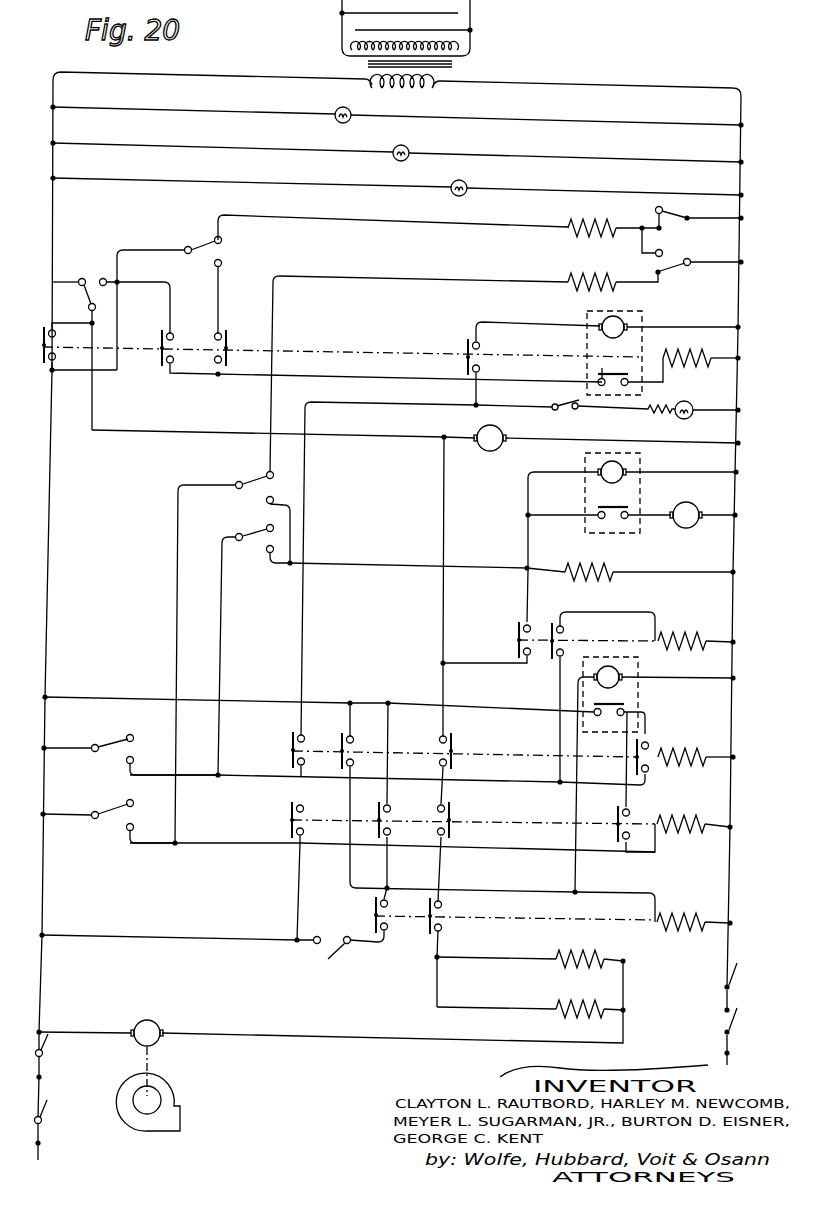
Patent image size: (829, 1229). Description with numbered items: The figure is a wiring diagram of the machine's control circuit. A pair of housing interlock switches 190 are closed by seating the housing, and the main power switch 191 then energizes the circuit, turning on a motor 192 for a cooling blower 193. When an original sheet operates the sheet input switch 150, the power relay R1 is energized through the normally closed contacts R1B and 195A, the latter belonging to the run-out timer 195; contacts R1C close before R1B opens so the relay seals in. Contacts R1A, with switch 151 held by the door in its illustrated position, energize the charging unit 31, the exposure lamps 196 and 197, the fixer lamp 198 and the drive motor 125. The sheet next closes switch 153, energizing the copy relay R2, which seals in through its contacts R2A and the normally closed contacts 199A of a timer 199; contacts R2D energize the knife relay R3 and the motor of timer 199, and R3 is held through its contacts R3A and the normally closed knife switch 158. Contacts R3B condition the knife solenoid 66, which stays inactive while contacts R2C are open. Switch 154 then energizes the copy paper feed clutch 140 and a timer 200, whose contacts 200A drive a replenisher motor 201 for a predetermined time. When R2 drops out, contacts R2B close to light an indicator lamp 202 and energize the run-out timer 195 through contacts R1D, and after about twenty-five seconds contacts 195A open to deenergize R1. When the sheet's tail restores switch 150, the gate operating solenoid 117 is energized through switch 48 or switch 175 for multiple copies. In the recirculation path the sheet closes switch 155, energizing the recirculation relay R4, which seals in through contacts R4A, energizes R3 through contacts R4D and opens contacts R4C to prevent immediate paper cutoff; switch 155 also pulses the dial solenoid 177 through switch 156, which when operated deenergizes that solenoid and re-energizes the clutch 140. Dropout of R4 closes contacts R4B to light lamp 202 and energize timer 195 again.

The charging unit 31 is at (486, 31).
The exposure lamp 196 is at (335, 121).
The exposure lamp 197 is at (393, 159).
The fixer lamp 198 is at (451, 194).
The switch 175 is at (665, 200).
The gate operating solenoid 117 is at (566, 232).
The switch 48 is at (645, 272).
The dial solenoid 177 is at (567, 289).
The sheet input switch 150 is at (226, 248).
The switch 151 is at (88, 272).
The relay contacts R1A is at (42, 321).
The normally closed contacts R1B is at (232, 342).
The relay contacts R1C is at (169, 374).
The relay contacts R1D is at (459, 354).
The run-out timer 195 is at (640, 312).
The normally closed contacts 195A is at (598, 378).
The power relay R1 is at (704, 356).
The indicator lamp 202 is at (680, 419).
The drive motor 125 is at (490, 452).
The timer 200 is at (643, 469).
The timer contacts 200A is at (591, 509).
The replenisher motor 201 is at (690, 529).
The copy paper feed clutch 140 is at (600, 582).
The switch 156 is at (258, 476).
The switch 154 is at (256, 555).
The timer 199 is at (638, 672).
The normally closed contacts 199A is at (633, 709).
The relay contacts R2A is at (630, 767).
The copy relay R2 is at (695, 747).
The relay contacts R2B is at (283, 752).
The normally open relay contacts R2D is at (339, 737).
The relay contacts R2C is at (460, 750).
The relay contacts R4A is at (620, 839).
The recirculation relay R4 is at (688, 818).
The relay contacts R4B is at (283, 824).
The relay contacts R4D is at (393, 819).
The relay contacts R4C is at (461, 822).
The knife relay R3 is at (688, 913).
The relay contacts R3A is at (365, 914).
The normally open relay contacts R3B is at (452, 921).
The knife switch 158 is at (333, 950).
The switch 153 is at (139, 741).
The switch 155 is at (124, 823).
The knife solenoid 66 is at (556, 1013).
The motor 192 is at (154, 1026).
The cooling blower 193 is at (166, 1096).
The housing interlock switches 190 is at (48, 1052).
The main power switch 191 is at (72, 1115).